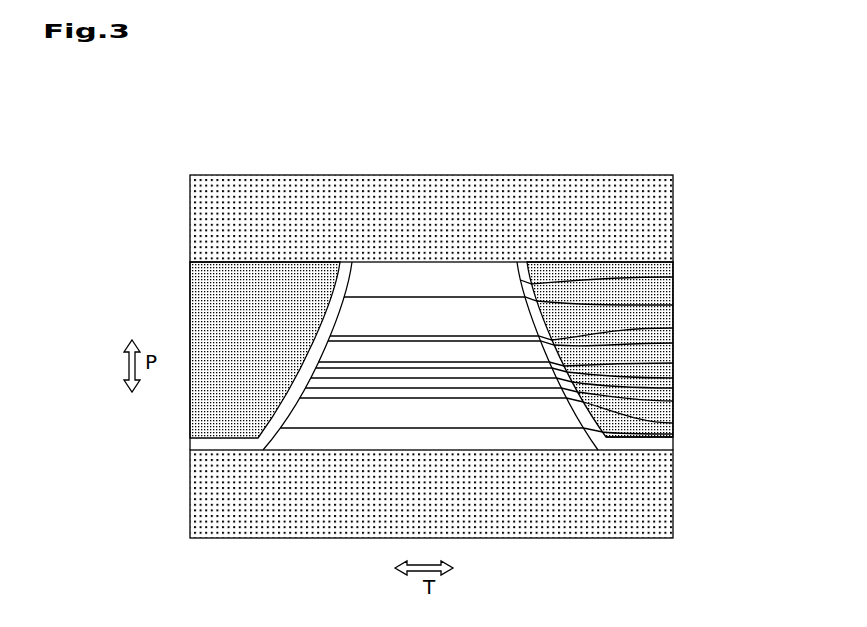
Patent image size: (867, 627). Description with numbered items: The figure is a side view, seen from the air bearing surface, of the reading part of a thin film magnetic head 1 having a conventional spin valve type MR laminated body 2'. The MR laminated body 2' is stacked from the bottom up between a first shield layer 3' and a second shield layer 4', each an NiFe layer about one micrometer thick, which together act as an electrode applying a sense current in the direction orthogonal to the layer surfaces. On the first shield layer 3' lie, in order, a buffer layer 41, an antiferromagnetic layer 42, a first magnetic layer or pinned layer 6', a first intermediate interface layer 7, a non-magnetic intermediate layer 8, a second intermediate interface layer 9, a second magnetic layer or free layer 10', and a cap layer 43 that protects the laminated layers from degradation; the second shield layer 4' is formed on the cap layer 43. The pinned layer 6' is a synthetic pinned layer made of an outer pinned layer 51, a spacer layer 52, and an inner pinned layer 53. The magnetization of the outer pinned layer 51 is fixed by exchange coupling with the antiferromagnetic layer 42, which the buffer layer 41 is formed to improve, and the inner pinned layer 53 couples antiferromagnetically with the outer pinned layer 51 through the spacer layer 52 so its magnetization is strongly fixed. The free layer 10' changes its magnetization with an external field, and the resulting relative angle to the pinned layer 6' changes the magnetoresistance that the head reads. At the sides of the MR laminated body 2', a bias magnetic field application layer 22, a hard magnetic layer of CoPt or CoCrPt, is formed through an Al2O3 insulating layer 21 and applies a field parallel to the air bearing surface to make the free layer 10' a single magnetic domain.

The thin film magnetic head 1 is at (459, 141).
The second shield layer 4' is at (400, 218).
The first shield layer 3' is at (400, 494).
The MR laminated body 2' is at (494, 353).
The bias magnetic field application layer 22 is at (190, 427).
The insulating layer 21 is at (673, 448).
The cap layer 43 is at (673, 277).
The second magnetic layer (free layer) 10' is at (551, 292).
The second intermediate interface layer 9 is at (673, 325).
The non-magnetic intermediate layer 8 is at (673, 343).
The first intermediate interface layer 7 is at (673, 357).
The inner pinned layer 53 is at (673, 372).
The spacer layer 52 is at (673, 390).
The outer pinned layer 51 is at (673, 402).
The first magnetic layer (pinned layer) 6' is at (647, 386).
The antiferromagnetic layer 42 is at (673, 423).
The buffer layer 41 is at (673, 435).